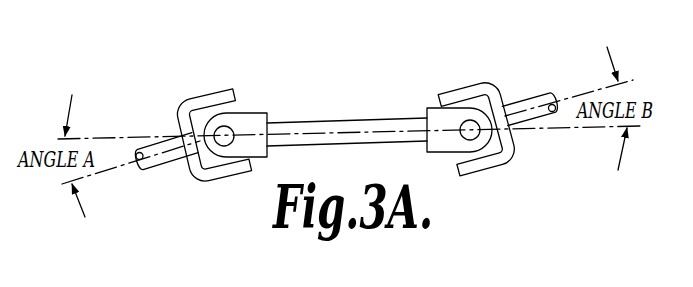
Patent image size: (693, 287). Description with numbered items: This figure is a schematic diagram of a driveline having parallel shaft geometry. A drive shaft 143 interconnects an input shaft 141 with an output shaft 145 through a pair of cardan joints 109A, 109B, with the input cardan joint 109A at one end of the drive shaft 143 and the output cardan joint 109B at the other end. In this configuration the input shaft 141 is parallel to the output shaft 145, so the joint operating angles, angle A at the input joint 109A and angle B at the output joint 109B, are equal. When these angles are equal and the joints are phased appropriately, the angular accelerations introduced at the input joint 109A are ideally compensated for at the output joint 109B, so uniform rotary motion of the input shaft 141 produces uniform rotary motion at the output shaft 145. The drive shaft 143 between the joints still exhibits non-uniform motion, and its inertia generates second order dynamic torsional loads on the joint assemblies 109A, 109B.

The input cardan joint 109A is at (206, 95).
The output cardan joint 109B is at (486, 81).
The input shaft 141 is at (163, 166).
The drive shaft 143 is at (337, 123).
The output shaft 145 is at (533, 119).